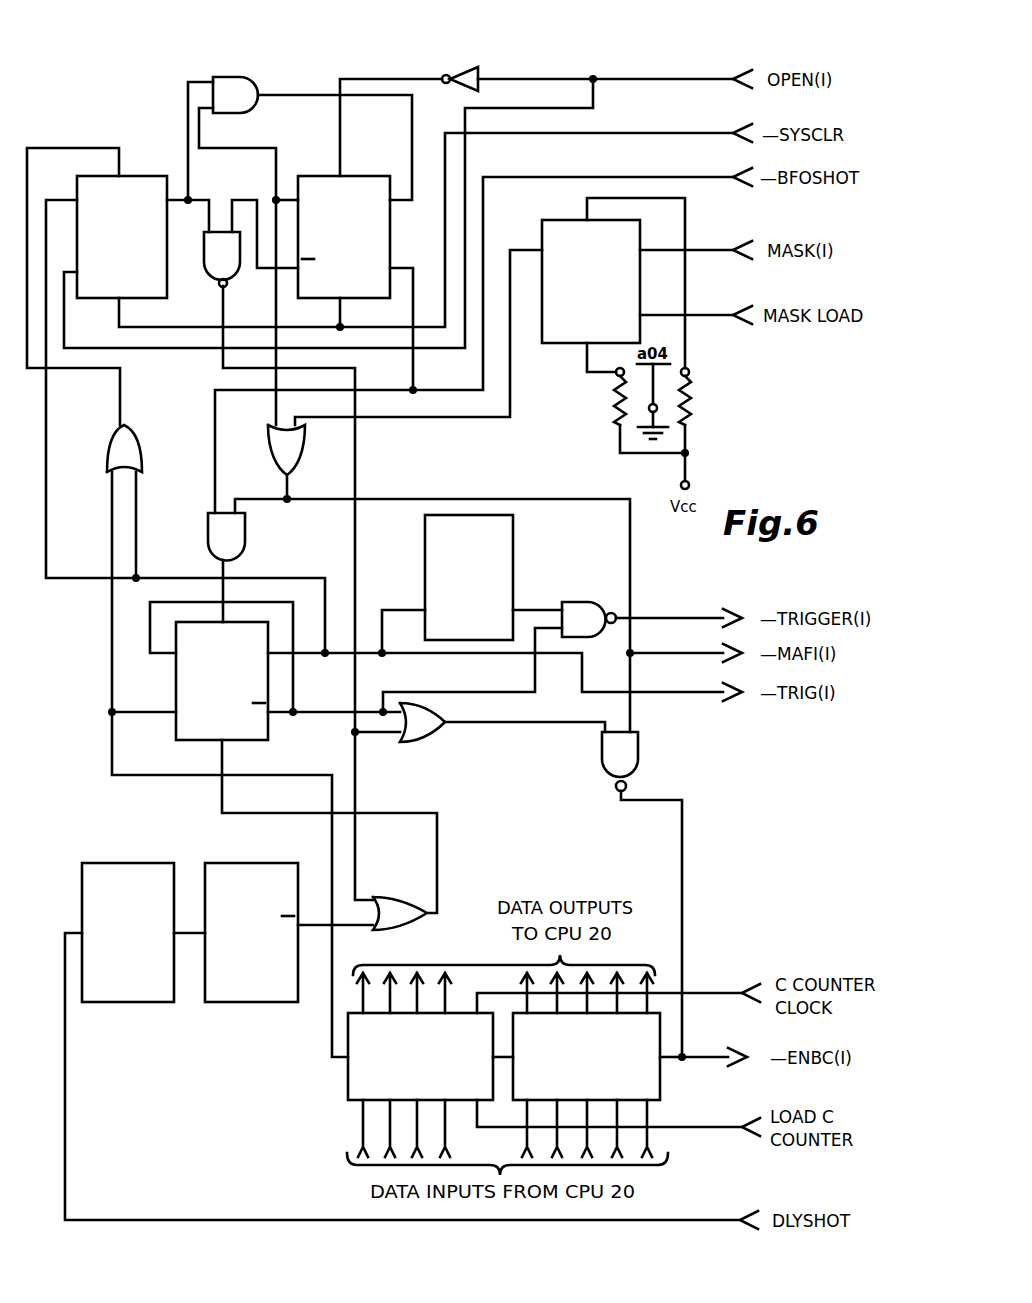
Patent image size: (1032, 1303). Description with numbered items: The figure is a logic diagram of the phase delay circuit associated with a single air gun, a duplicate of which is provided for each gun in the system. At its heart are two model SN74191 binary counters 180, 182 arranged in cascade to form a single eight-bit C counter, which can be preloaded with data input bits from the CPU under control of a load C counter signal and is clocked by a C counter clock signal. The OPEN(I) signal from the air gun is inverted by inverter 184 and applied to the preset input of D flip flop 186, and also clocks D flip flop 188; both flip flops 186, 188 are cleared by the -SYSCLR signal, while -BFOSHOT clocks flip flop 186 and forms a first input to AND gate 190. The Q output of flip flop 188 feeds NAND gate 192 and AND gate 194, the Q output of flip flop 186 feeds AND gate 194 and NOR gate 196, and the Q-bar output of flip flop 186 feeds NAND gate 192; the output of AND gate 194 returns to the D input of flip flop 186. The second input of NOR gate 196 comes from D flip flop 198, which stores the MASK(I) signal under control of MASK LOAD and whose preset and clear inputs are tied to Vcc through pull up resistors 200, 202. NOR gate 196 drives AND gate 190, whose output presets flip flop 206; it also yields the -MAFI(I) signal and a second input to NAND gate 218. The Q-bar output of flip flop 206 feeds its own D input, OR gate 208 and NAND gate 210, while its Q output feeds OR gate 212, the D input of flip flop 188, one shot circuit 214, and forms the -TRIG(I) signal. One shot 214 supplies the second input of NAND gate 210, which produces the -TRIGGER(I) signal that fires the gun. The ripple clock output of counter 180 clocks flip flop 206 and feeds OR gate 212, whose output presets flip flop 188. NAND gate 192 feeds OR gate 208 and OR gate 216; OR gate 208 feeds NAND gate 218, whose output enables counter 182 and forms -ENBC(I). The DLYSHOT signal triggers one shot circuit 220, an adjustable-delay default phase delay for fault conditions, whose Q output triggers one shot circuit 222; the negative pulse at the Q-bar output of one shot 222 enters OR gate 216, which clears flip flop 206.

The binary counter 180 is at (348, 1080).
The binary counter 182 is at (657, 1090).
The inverter 184 is at (466, 70).
The D flip flop 186 is at (320, 178).
The D flip flop 188 is at (137, 178).
The AND gate 190 is at (240, 537).
The NAND gate 192 is at (218, 262).
The AND gate 194 is at (245, 80).
The NOR gate 196 is at (300, 455).
The D flip flop 198 is at (576, 224).
The pull up resistor 200 is at (615, 396).
The pull up resistor 202 is at (691, 404).
The flip flop 206 is at (176, 692).
The OR gate 208 is at (432, 735).
The NAND gate 210 is at (578, 600).
The OR gate 212 is at (130, 440).
The one shot circuit 214 is at (425, 556).
The OR gate 216 is at (393, 897).
The NAND gate 218 is at (605, 762).
The one shot circuit 220 is at (125, 866).
The one shot circuit 222 is at (242, 864).